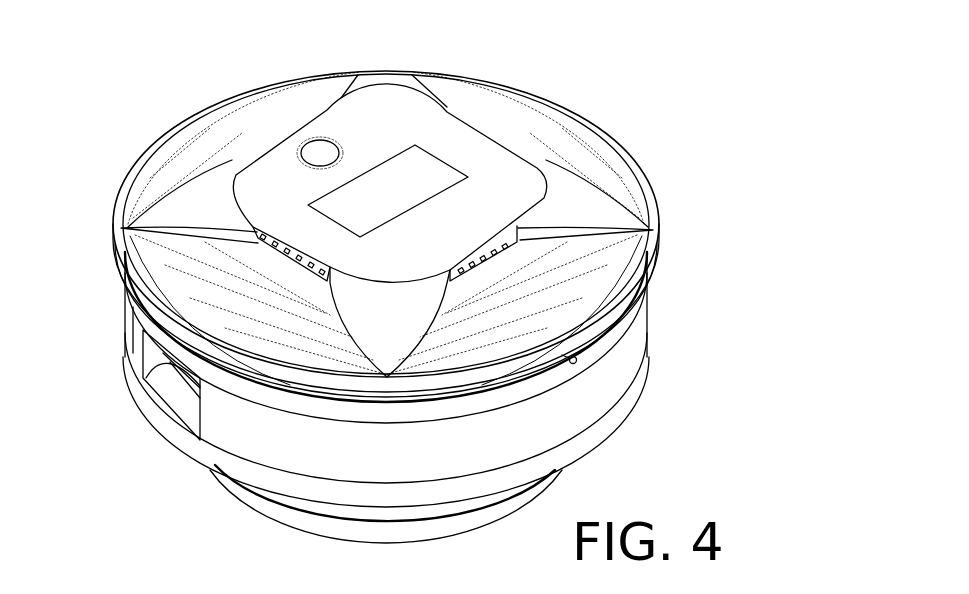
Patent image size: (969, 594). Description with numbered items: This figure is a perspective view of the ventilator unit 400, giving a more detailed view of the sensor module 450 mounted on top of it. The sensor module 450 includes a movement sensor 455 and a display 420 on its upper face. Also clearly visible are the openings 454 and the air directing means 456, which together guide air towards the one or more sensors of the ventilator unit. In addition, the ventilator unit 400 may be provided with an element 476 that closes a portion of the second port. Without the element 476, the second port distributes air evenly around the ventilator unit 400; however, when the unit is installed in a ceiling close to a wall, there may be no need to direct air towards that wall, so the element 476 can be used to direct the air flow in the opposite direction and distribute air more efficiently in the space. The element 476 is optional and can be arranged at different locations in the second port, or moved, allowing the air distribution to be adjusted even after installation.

The ventilator unit 400 is at (410, 277).
The sensor module 450 is at (197, 132).
The movement sensor 455 is at (335, 150).
The display 420 is at (390, 187).
The air directing means 456 is at (580, 213).
The openings 454 is at (497, 263).
The element 476 is at (530, 417).